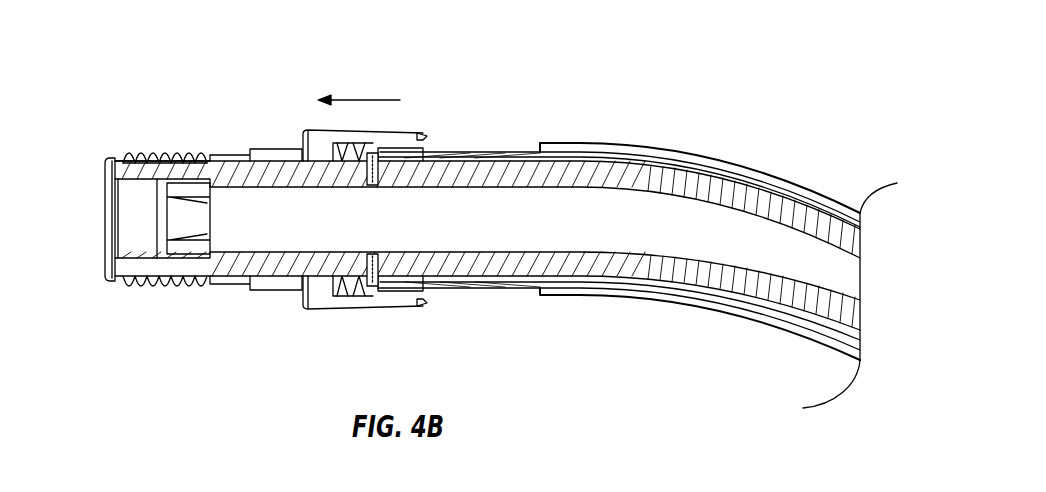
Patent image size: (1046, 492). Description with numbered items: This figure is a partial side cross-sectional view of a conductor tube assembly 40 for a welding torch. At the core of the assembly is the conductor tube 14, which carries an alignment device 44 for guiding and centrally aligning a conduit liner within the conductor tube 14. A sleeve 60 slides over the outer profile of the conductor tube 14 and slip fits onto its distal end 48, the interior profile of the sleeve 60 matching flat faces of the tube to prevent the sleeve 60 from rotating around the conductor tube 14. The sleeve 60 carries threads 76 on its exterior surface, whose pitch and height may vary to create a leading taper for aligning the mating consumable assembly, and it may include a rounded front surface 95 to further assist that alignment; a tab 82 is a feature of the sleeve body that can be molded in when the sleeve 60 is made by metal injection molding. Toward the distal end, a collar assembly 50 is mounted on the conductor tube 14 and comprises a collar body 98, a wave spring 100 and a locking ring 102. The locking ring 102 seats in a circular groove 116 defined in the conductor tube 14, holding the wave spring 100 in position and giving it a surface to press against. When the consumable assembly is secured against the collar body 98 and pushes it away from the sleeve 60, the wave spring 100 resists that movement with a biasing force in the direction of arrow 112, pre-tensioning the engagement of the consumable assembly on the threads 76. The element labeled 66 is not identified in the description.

The conductor tube assembly 40 is at (588, 90).
The conductor tube 14 is at (688, 183).
The tab 82 is at (108, 166).
The rounded front surface 95 is at (102, 288).
The threads 76 is at (172, 138).
The distal end 48 is at (140, 135).
The alignment device 44 is at (195, 255).
The insert 66 is at (143, 262).
The sleeve 60 is at (243, 148).
The collar body 98 is at (318, 128).
The collar assembly 50 is at (330, 309).
The wave spring 100 is at (373, 172).
The circular groove 116 is at (378, 165).
The locking ring 102 is at (374, 276).
The arrow 112 is at (375, 100).